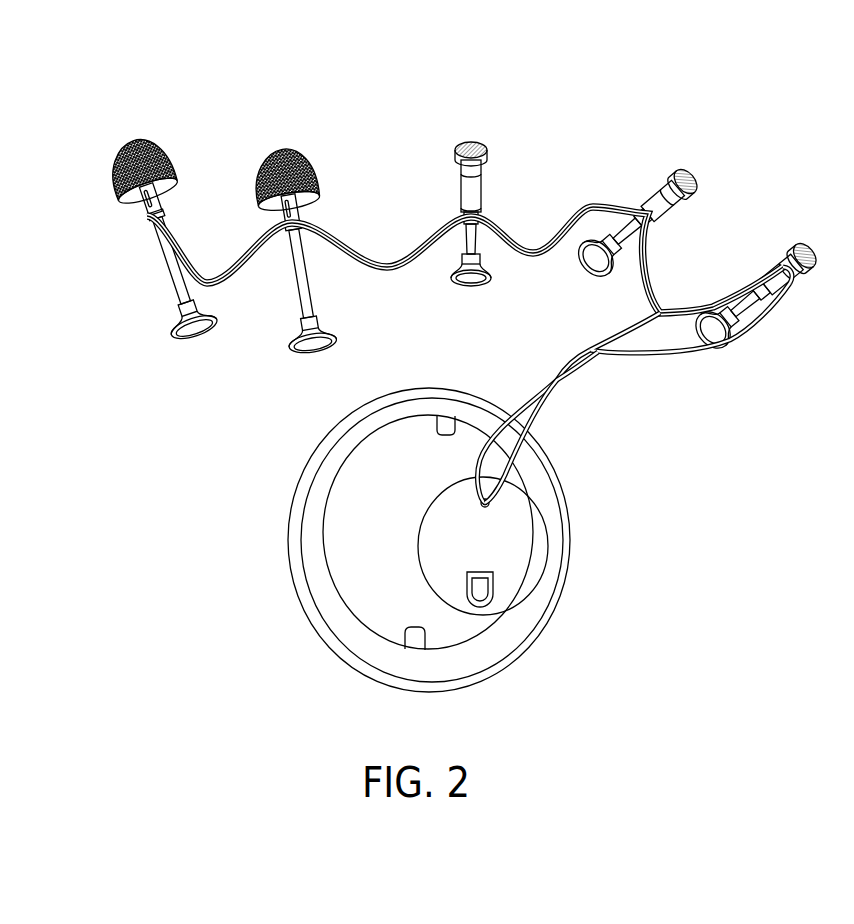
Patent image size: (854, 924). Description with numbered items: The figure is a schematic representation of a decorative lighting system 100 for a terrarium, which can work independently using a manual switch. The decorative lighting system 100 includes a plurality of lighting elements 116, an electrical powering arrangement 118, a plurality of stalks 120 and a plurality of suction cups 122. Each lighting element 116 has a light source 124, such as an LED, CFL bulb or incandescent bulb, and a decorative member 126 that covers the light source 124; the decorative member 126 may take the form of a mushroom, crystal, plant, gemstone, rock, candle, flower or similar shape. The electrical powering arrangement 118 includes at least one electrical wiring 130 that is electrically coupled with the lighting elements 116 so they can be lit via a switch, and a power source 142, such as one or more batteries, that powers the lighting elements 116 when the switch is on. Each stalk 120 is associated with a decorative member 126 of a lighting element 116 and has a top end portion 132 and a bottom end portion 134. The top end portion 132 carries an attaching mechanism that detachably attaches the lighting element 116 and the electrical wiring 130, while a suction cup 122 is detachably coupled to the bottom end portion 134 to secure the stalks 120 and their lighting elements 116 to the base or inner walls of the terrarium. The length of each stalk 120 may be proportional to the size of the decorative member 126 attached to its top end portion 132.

The decorative lighting system 100 is at (186, 95).
The lighting element 116 is at (303, 129).
The electrical powering arrangement 118 is at (507, 540).
The stalk 120 is at (116, 274).
The suction cup 122 is at (302, 347).
The light source 124 is at (160, 200).
The decorative member 126 is at (268, 156).
The electrical wiring 130 is at (533, 425).
The top end portion 132 is at (141, 208).
The bottom end portion 134 is at (112, 207).
The power source 142 is at (533, 567).